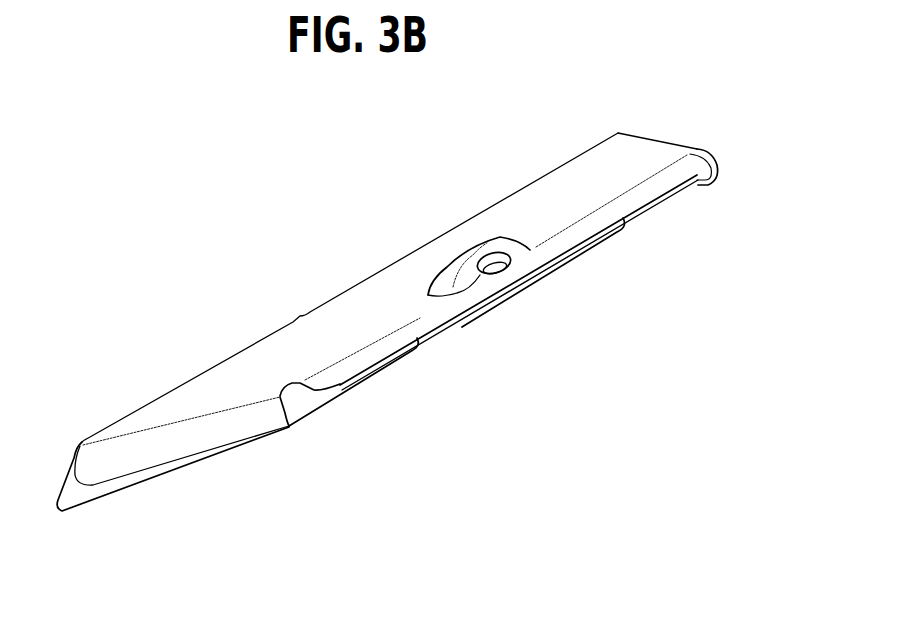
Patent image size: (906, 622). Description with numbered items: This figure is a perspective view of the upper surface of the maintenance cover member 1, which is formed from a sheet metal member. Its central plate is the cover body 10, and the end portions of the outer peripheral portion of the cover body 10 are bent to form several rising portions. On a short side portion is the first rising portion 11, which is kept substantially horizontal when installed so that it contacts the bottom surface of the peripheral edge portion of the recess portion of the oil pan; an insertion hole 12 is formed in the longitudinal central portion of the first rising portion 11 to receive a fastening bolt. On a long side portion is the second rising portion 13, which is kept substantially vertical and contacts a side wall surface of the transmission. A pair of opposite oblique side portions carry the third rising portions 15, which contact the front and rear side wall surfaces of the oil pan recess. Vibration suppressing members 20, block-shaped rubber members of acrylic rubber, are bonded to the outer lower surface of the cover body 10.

The maintenance cover member 1 is at (332, 205).
The cover body 10 is at (635, 160).
The first rising portion 11 is at (643, 195).
The insertion hole 12 is at (510, 273).
The second rising portion 13 is at (73, 492).
The third rising portions 15 is at (718, 162).
The vibration suppressing members 20 is at (570, 260).